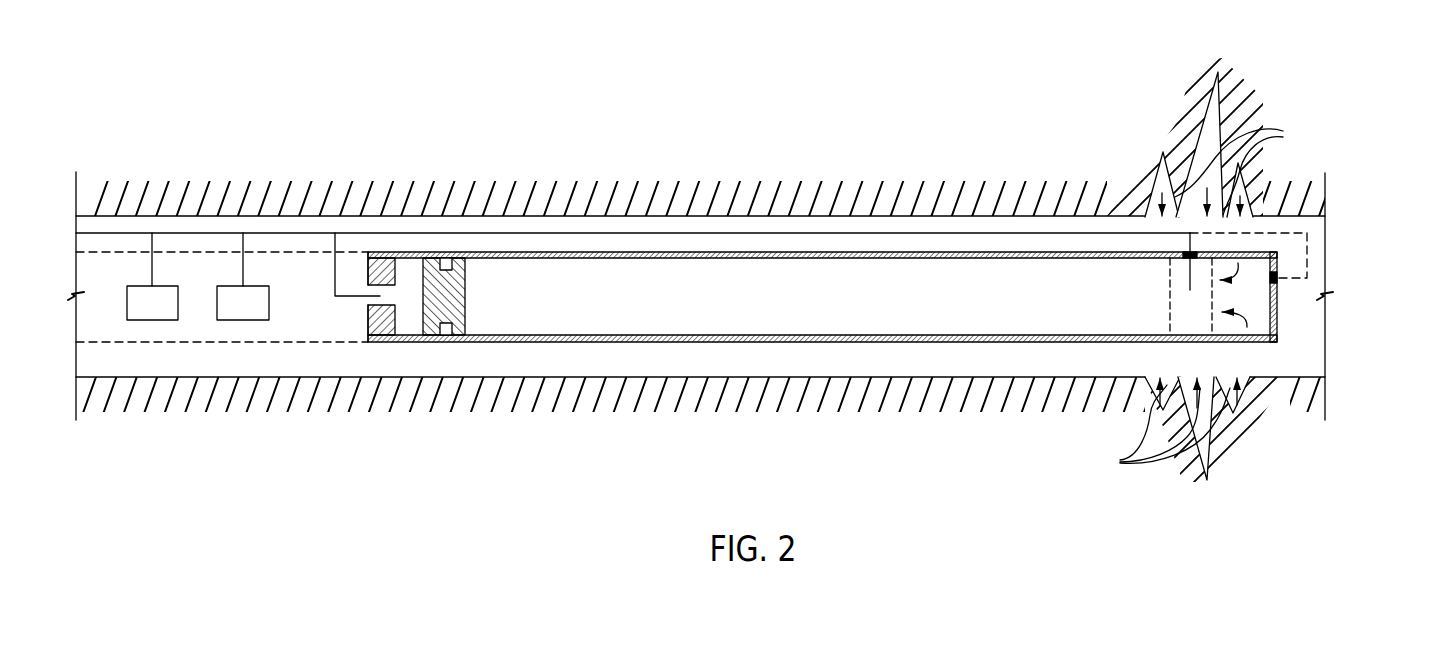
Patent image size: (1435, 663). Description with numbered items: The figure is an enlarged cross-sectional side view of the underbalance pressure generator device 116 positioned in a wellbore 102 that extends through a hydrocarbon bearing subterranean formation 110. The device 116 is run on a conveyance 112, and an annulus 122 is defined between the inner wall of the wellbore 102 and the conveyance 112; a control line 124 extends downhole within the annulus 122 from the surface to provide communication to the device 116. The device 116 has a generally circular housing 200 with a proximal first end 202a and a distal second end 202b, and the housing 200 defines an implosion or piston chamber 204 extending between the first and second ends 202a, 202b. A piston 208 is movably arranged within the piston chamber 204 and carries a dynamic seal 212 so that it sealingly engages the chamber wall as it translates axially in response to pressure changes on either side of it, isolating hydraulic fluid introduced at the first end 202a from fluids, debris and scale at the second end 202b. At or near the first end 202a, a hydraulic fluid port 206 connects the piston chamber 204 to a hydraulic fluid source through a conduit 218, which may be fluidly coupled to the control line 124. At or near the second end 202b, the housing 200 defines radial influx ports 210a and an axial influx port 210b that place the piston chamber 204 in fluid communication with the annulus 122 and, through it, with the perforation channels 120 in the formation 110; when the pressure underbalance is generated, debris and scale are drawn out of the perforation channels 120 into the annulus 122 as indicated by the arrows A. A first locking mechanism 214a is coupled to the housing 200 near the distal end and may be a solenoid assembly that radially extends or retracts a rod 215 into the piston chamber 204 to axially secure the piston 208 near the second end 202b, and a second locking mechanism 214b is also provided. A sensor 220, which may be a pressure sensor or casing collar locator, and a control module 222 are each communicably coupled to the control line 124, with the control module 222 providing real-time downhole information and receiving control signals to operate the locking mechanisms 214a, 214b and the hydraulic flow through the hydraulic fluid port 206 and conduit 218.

The wellbore 102 is at (518, 216).
The subterranean formation 110 is at (736, 179).
The conveyance 112 is at (131, 342).
The underbalance pressure generator device 116 is at (334, 72).
The perforation channels 120 is at (1200, 127).
The annulus 122 is at (592, 225).
The control line 124 is at (107, 232).
The housing 200 is at (440, 252).
The first end 202a is at (362, 348).
The second end 202b is at (1312, 345).
The piston chamber 204 is at (776, 309).
The hydraulic fluid port 206 is at (368, 303).
The piston 208 is at (465, 300).
The radial influx ports 210a is at (1250, 252).
The axial influx ports 210b is at (1252, 308).
The dynamic seal 212 is at (445, 330).
The first locking mechanism 214a is at (1188, 252).
The second locking mechanism 214b is at (1279, 285).
The rod 215 is at (1190, 275).
The conduit 218 is at (335, 285).
The sensor 220 is at (137, 313).
The control module 222 is at (228, 313).